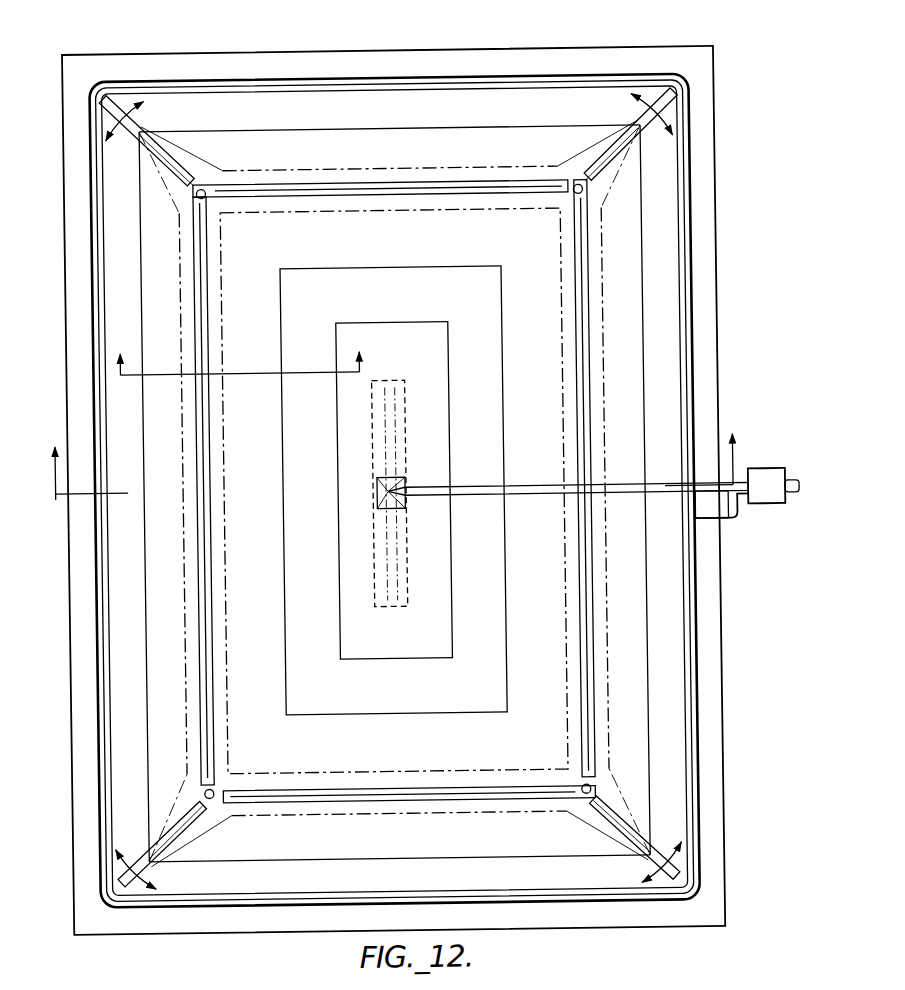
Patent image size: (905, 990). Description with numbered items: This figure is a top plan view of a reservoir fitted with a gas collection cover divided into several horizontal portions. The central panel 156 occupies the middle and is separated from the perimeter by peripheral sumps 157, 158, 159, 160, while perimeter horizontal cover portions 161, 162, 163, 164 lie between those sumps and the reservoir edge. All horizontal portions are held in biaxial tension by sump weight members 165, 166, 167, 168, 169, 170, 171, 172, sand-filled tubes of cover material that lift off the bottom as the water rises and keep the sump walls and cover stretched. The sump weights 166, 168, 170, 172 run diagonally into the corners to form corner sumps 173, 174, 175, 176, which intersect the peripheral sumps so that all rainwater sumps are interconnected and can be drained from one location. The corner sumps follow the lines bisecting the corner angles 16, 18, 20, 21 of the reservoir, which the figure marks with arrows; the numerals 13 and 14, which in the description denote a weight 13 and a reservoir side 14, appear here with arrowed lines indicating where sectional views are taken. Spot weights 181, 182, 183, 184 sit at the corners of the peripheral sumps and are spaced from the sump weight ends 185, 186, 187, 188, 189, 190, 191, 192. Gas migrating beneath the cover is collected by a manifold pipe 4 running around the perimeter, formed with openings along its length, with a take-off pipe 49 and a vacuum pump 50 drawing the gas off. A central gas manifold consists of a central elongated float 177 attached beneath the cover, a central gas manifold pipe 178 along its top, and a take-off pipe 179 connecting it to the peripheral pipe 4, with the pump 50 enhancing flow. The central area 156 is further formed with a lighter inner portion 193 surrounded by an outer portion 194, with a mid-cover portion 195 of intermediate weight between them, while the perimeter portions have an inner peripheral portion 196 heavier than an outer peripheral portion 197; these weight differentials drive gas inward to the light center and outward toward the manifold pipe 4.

The manifold pipe 4 is at (692, 588).
The weight 13 is at (395, 454).
The reservoir side 14 is at (241, 351).
The angle 16 is at (118, 138).
The angle 18 is at (655, 138).
The angle 20 is at (662, 855).
The angle 21 is at (122, 850).
The take-off pipe 49 is at (731, 522).
The vacuum pump 50 is at (766, 454).
The central panel 156 is at (357, 236).
The peripheral sump 157 is at (458, 175).
The peripheral sump 158 is at (595, 308).
The peripheral sump 159 is at (402, 808).
The peripheral sump 160 is at (212, 416).
The perimeter horizontal cover portion 161 is at (459, 112).
The perimeter horizontal cover portion 162 is at (650, 383).
The perimeter horizontal cover portion 163 is at (344, 877).
The perimeter horizontal cover portion 164 is at (128, 548).
The sump weight member 165 is at (471, 194).
The sump weight member 166 is at (668, 98).
The sump weight member 167 is at (573, 325).
The sump weight member 168 is at (668, 888).
The sump weight member 169 is at (402, 780).
The sump weight member 170 is at (110, 888).
The sump weight member 171 is at (192, 430).
The sump weight member 172 is at (108, 102).
The corner sump 173 is at (630, 130).
The corner sump 174 is at (632, 866).
The corner sump 175 is at (150, 862).
The corner sump 176 is at (142, 128).
The central elongated float 177 is at (404, 425).
The central gas manifold pipe 178 is at (382, 384).
The take-off pipe 179 is at (455, 478).
The spot weight 181 is at (585, 196).
The spot weight 182 is at (584, 786).
The spot weight 183 is at (196, 792).
The spot weight 184 is at (196, 199).
The sump weight end 185 is at (566, 200).
The sump weight end 186 is at (573, 784).
The sump weight end 187 is at (578, 808).
The sump weight end 188 is at (220, 806).
The sump weight end 189 is at (216, 785).
The sump weight end 190 is at (202, 205).
The sump weight end 191 is at (211, 188).
The sump weight end 192 is at (570, 186).
The inner portion 193 is at (402, 656).
The outer portion 194 is at (257, 654).
The mid-cover portion 195 is at (317, 655).
The inner peripheral portion 196 is at (175, 653).
The outer peripheral portion 197 is at (138, 653).